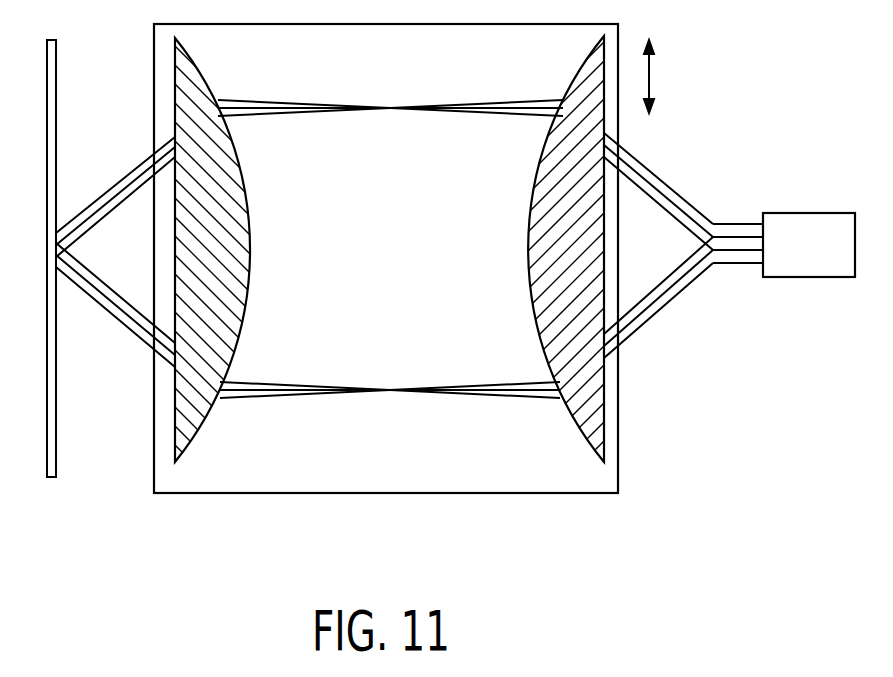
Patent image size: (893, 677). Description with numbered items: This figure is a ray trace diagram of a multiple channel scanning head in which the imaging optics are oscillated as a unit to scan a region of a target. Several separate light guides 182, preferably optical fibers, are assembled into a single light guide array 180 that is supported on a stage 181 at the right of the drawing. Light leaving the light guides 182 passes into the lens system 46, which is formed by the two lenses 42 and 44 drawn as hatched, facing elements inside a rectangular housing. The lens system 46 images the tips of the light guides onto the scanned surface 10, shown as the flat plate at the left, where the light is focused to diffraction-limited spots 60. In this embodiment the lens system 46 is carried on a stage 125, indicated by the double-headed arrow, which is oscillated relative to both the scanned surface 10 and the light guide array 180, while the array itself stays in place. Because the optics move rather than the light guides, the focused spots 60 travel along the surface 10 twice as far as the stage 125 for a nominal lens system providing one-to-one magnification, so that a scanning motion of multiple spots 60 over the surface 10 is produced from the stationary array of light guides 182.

The scanned surface 10 is at (57, 90).
The focused light spot 60 is at (57, 267).
The lens 42 is at (197, 242).
The lens 44 is at (552, 238).
The lens system 46 is at (364, 347).
The stage 125 is at (510, 65).
The light guide array 180 is at (748, 208).
The stage 181 is at (794, 260).
The light guides 182 is at (740, 272).